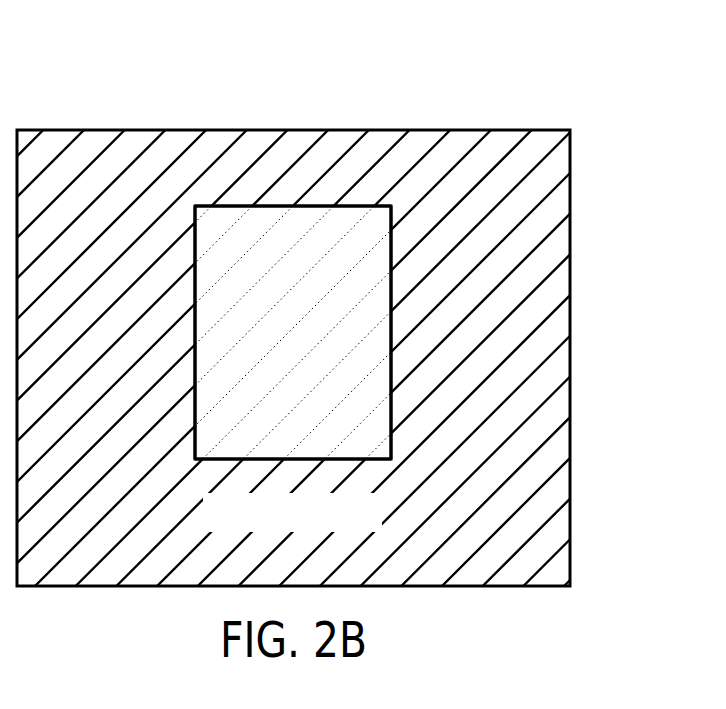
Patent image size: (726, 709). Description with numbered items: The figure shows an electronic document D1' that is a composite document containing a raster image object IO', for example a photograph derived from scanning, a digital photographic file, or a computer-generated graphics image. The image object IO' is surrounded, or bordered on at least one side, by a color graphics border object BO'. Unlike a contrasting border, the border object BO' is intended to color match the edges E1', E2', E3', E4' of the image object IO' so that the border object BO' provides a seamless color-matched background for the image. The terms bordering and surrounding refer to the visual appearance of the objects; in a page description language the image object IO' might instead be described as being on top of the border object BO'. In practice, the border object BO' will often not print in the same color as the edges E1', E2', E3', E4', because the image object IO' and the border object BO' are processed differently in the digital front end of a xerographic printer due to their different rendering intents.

The edge of the image object E4' is at (161, 265).
The edge of the image object E1' is at (293, 138).
The edge of the image object E2' is at (520, 320).
The edge of the image object E3' is at (422, 510).
The electronic document D1' is at (333, 358).
The raster image object IO' is at (363, 358).
The border object BO' is at (363, 358).